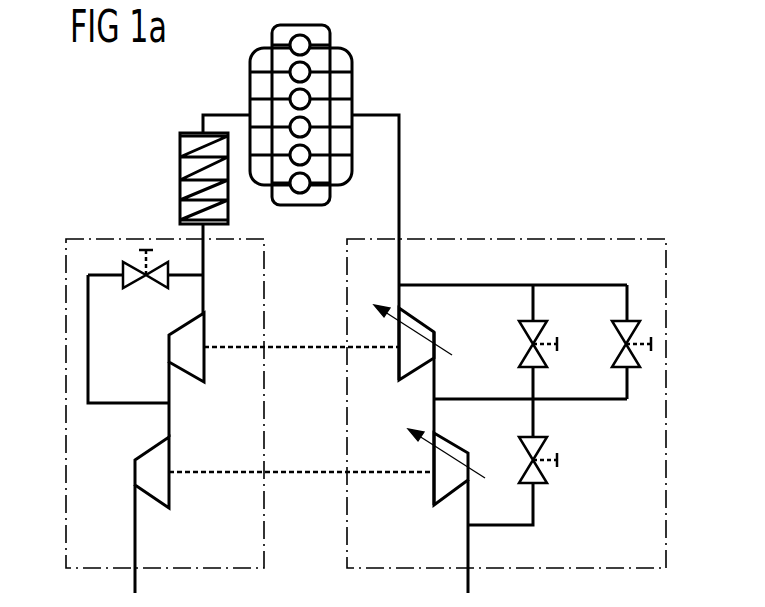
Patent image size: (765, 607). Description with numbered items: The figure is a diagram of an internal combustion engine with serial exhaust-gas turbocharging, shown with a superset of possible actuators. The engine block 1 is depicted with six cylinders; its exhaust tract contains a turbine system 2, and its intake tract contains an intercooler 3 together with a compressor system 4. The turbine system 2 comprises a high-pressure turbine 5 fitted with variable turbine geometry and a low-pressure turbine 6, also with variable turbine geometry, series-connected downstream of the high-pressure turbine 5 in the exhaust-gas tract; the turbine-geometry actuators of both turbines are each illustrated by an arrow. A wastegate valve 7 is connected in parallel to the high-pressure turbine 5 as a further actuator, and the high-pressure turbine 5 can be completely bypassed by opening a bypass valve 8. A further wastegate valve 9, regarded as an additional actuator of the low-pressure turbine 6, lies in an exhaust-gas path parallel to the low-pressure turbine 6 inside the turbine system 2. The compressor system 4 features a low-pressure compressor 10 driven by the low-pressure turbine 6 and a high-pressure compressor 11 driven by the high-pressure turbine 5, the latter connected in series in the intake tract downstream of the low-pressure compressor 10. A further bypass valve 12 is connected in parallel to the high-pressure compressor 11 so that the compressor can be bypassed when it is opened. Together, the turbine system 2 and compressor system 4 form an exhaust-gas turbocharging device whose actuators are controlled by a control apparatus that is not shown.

The engine block 1 is at (300, 207).
The turbine system 2 is at (549, 239).
The intercooler 3 is at (180, 148).
The compressor system 4 is at (115, 239).
The high-pressure turbine 5 is at (398, 368).
The low-pressure turbine 6 is at (434, 492).
The wastegate valve 7 is at (527, 330).
The bypass valve 8 is at (618, 330).
The further wastegate valve 9 is at (537, 485).
The low-pressure compressor 10 is at (169, 490).
The high-pressure compressor 11 is at (203, 377).
The bypass valve 12 is at (140, 290).